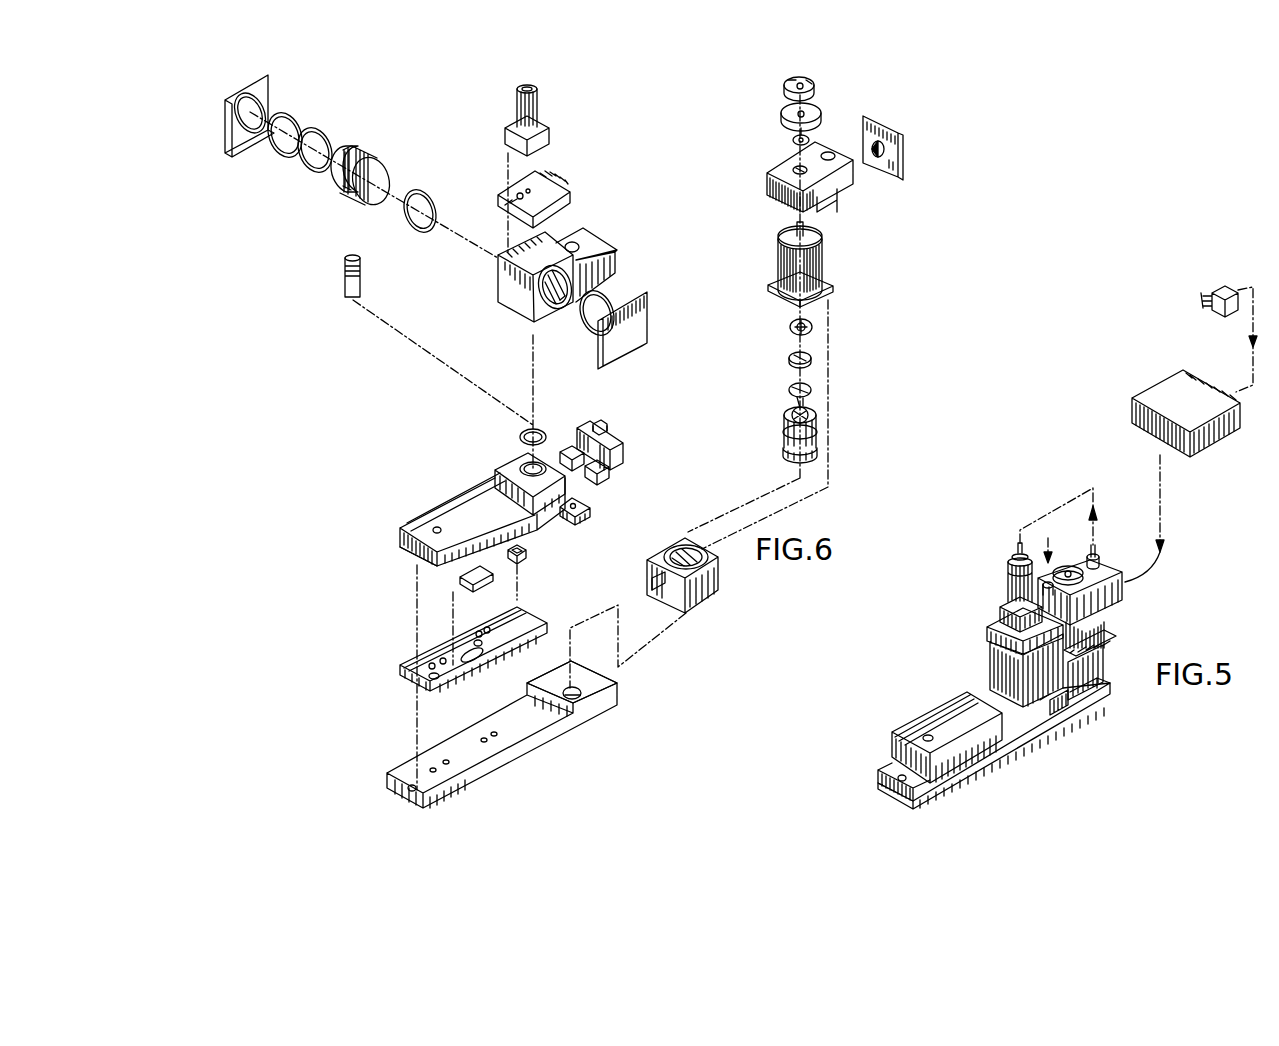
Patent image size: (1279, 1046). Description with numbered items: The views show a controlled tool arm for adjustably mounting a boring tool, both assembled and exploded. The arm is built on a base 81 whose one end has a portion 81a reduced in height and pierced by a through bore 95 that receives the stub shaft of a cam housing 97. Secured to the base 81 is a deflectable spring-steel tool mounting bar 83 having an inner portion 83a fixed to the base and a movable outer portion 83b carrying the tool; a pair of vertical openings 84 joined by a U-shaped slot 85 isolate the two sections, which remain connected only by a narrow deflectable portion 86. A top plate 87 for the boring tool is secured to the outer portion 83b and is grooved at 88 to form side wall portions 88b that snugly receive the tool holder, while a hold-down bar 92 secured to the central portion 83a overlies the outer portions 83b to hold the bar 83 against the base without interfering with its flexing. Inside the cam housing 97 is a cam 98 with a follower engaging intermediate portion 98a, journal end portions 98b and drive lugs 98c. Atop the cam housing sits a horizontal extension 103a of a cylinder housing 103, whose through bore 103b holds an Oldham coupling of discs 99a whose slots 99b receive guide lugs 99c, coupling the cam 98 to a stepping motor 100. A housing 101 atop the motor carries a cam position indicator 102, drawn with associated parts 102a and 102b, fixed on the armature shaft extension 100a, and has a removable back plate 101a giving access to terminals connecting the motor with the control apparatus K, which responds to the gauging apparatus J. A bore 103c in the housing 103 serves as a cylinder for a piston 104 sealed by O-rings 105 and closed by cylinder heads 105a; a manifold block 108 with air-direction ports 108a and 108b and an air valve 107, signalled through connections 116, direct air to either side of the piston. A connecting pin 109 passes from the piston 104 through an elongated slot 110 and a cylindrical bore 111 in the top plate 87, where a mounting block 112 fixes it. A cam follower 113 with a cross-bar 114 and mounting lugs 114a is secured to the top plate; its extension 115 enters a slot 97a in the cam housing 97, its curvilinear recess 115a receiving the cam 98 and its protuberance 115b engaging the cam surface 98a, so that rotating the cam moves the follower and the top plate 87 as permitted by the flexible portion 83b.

In FIG. 6, the base 81 is at (512, 724).
In FIG. 5, the base 81 is at (1011, 743).
In FIG. 6, the reduced-height portion of mount bar 81a is at (590, 700).
In FIG. 5, the reduced-height portion of mount bar 81a is at (1093, 700).
In FIG. 6, the tool mounting bar 83 is at (438, 652).
In FIG. 5, the tool mounting bar 83 is at (908, 797).
In FIG. 6, the inner portion of bar 83a is at (492, 648).
In FIG. 6, the outer portion of bar 83b is at (458, 628).
In FIG. 6, the vertically extending openings 84 is at (410, 683).
In FIG. 6, the U-shaped slot 85 is at (470, 665).
In FIG. 6, the narrow deflectable portion 86 is at (425, 676).
In FIG. 6, the top plate 87 is at (403, 532).
In FIG. 5, the top plate 87 is at (895, 745).
In FIG. 6, the groove 88 is at (481, 503).
In FIG. 6, the side wall portions 88b is at (470, 487).
In FIG. 6, the hold-down bar 92 is at (482, 575).
In FIG. 6, the through bore 95 is at (572, 686).
In FIG. 6, the cam housing 97 is at (672, 575).
In FIG. 6, the slot in cam housing 97a is at (650, 580).
In FIG. 6, the cam 98 is at (809, 441).
In FIG. 6, the follower engaging cam portion 98a is at (818, 432).
In FIG. 6, the journal end portions 98b is at (786, 452).
In FIG. 6, the drive lugs 98c is at (790, 415).
In FIG. 6, the discs 99a is at (792, 385).
In FIG. 6, the slots 99b is at (812, 397).
In FIG. 6, the guide lugs 99c is at (810, 357).
In FIG. 6, the stepping motor 100 is at (790, 264).
In FIG. 5, the stepping motor 100 is at (1100, 632).
In FIG. 6, the armature shaft extension 100a is at (780, 232).
In FIG. 6, the housing 101 is at (852, 185).
In FIG. 5, the housing 101 is at (1104, 569).
In FIG. 6, the removable back plate 101a is at (904, 150).
In FIG. 6, the cam position indicator 102 is at (812, 83).
In FIG. 5, the cam position indicator 102 is at (1068, 560).
In FIG. 6, the disc 102a is at (815, 112).
In FIG. 6, the washer 102b is at (794, 141).
In FIG. 6, the cylinder housing 103 is at (560, 284).
In FIG. 5, the cylinder housing 103 is at (1000, 660).
In FIG. 6, the horizontal extension 103a is at (612, 262).
In FIG. 6, the through bore 103b is at (583, 242).
In FIG. 6, the cylinder bore 103c is at (560, 307).
In FIG. 6, the piston 104 is at (348, 192).
In FIG. 6, the O-rings 105 is at (298, 115).
In FIG. 6, the cylinder heads 105a is at (219, 137).
In FIG. 6, the air valve 107 is at (538, 108).
In FIG. 5, the air valve 107 is at (1010, 590).
In FIG. 6, the manifold block 108 is at (516, 189).
In FIG. 5, the manifold block 108 is at (987, 628).
In FIG. 6, the air-direction port 108a is at (500, 190).
In FIG. 6, the air-direction port 108b is at (500, 207).
In FIG. 6, the connecting pin 109 is at (345, 287).
In FIG. 6, the elongated slot 110 is at (545, 290).
In FIG. 6, the cylindrical bore 111 is at (522, 466).
In FIG. 6, the mounting block 112 is at (590, 510).
In FIG. 6, the cam follower 113 is at (618, 430).
In FIG. 6, the cross-bar 114 is at (622, 462).
In FIG. 5, the cross-bar 114 is at (1060, 718).
In FIG. 6, the mounting lugs 114a is at (530, 428).
In FIG. 6, the extension 115 is at (604, 420).
In FIG. 6, the curvilinear recess 115a is at (594, 422).
In FIG. 6, the follower protuberance 115b is at (610, 422).
In FIG. 5, the connections 116 is at (1045, 505).
In FIG. 5, the gauging apparatus J is at (1212, 315).
In FIG. 5, the control apparatus K is at (1225, 433).